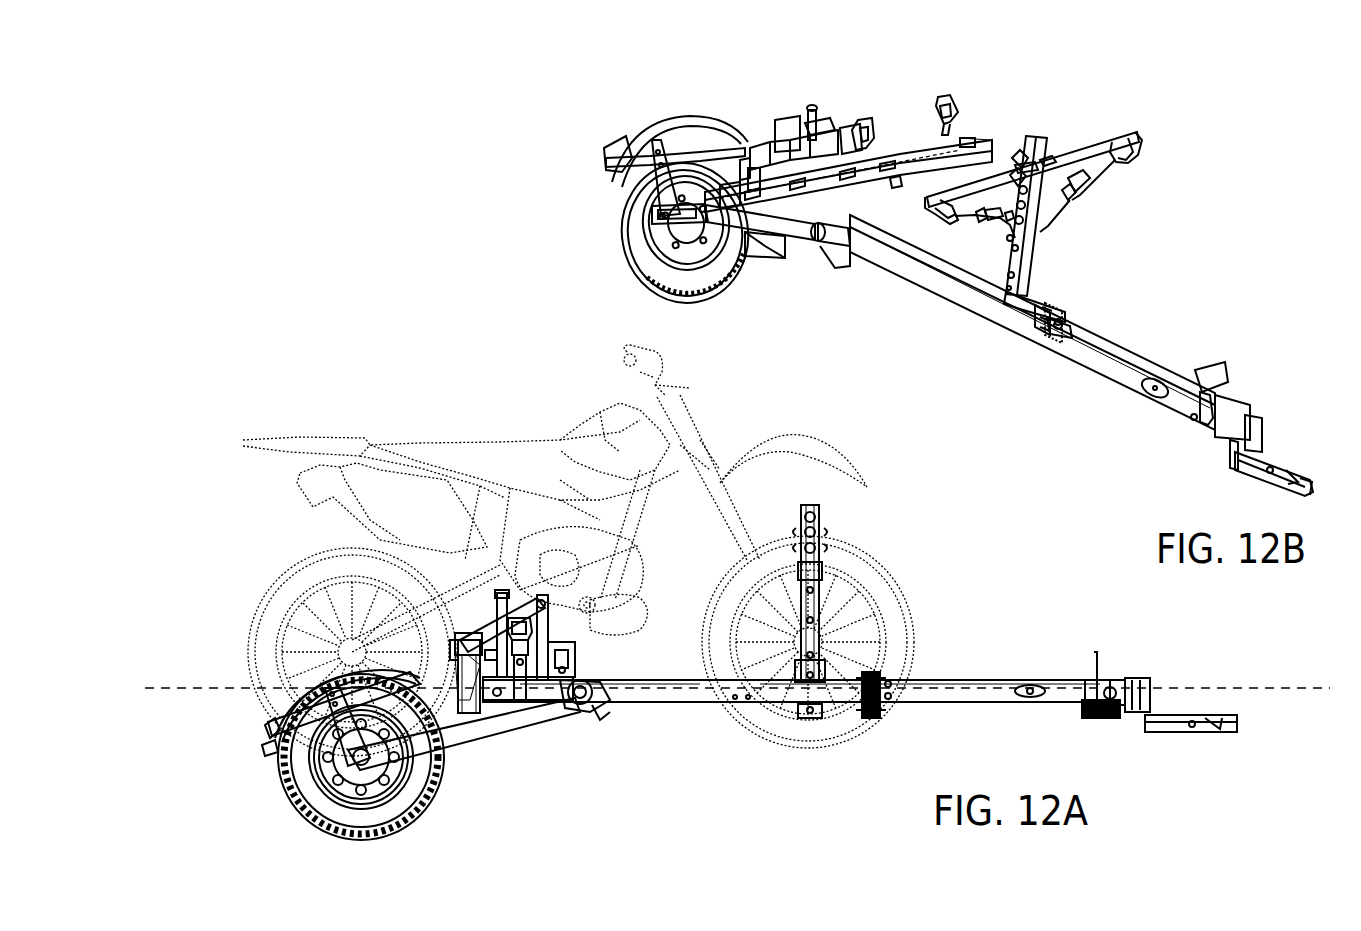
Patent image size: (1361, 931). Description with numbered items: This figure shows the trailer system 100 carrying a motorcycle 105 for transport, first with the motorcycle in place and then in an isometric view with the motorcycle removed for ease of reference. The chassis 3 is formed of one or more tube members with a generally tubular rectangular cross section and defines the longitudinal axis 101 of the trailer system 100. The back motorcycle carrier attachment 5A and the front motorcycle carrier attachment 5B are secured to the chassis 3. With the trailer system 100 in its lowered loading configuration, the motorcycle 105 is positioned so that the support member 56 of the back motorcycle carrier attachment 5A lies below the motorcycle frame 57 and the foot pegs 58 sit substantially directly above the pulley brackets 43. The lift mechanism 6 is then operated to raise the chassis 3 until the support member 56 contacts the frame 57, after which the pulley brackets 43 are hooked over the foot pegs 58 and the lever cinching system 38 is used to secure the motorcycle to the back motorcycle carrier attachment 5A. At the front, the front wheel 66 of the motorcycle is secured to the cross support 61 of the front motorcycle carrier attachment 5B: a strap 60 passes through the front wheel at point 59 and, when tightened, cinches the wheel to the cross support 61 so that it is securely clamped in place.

In FIG. 12B, the chassis 3 is at (1212, 326).
In FIG. 12B, the back motorcycle carrier attachment 5A is at (1003, 92).
In FIG. 12B, the front motorcycle carrier attachment 5B is at (1097, 240).
In FIG. 12B, the lift mechanism 6 is at (790, 88).
In FIG. 12B, the lever cinching system 38 is at (896, 195).
In FIG. 12B, the pulley brackets 43 is at (947, 107).
In FIG. 12B, the support member 56 is at (980, 138).
In FIG. 12A, the motorcycle frame 57 is at (593, 643).
In FIG. 12A, the foot pegs 58 is at (523, 647).
In FIG. 12A, the point 59 is at (842, 525).
In FIG. 12B, the strap 60 is at (1122, 165).
In FIG. 12B, the cross support 61 is at (1130, 128).
In FIG. 12A, the front wheel 66 is at (915, 612).
In FIG. 12B, the trailer system 100 is at (467, 212).
In FIG. 12A, the trailer system 100 is at (340, 378).
In FIG. 12A, the longitudinal axis 101 is at (1265, 694).
In FIG. 12A, the motorcycle 105 is at (506, 440).